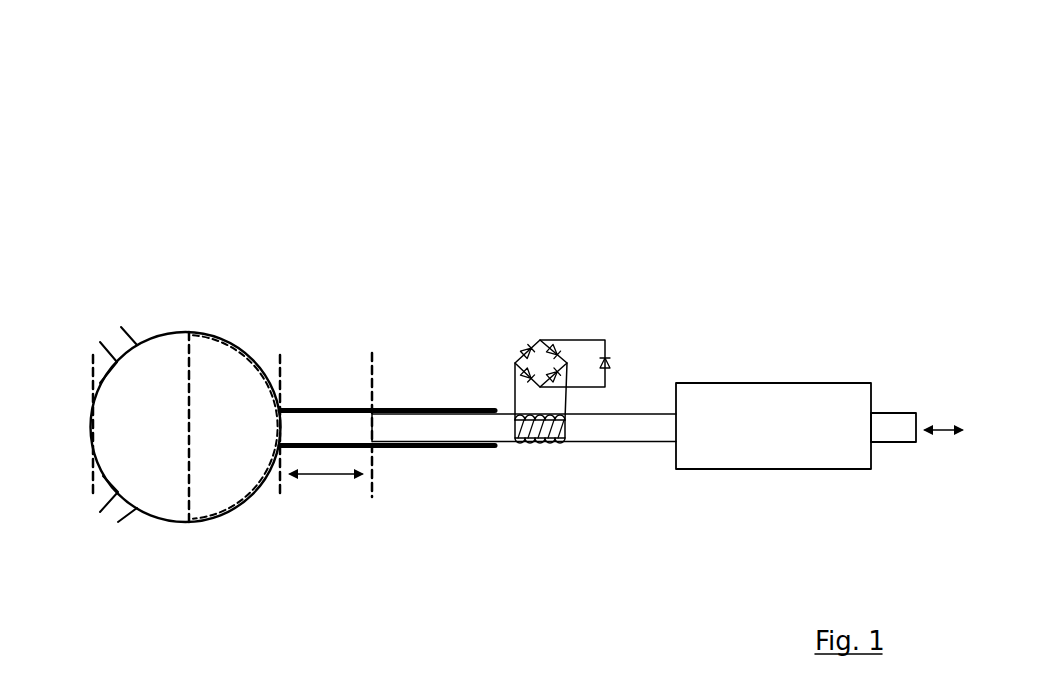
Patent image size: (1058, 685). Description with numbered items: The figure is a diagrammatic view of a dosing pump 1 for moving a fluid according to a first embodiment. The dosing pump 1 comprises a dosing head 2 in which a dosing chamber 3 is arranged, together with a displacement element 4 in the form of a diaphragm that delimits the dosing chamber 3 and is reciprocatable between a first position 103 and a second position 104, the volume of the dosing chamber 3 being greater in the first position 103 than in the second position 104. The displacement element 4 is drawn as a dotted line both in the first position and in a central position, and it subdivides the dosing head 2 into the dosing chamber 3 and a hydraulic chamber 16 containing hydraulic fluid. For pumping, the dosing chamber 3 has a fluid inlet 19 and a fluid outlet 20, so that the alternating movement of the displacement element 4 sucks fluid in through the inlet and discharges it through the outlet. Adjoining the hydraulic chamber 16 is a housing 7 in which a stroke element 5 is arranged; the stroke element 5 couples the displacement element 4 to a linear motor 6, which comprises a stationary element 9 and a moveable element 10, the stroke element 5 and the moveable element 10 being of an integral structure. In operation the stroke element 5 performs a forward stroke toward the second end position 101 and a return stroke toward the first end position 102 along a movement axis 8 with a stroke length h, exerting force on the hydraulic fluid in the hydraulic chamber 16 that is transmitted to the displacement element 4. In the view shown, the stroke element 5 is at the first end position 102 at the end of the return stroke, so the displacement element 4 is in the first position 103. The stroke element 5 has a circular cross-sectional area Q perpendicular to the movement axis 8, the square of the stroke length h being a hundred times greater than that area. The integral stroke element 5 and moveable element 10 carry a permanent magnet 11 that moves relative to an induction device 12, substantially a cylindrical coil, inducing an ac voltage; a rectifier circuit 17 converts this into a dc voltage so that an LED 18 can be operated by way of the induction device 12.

The dosing pump 1 is at (155, 128).
The dosing head 2 is at (212, 238).
The dosing chamber 3 is at (120, 397).
The displacement element 4 is at (190, 333).
The stroke element 5 is at (443, 441).
The linear motor 6 is at (777, 312).
The housing 7 is at (428, 407).
The movement axis 8 is at (950, 424).
The stationary element 9 is at (808, 471).
The moveable element 10 is at (633, 440).
The permanent magnet 11 is at (518, 442).
The induction device 12 is at (557, 443).
The hydraulic chamber 16 is at (227, 500).
The rectifier circuit 17 is at (545, 348).
The LED 18 is at (615, 358).
The fluid inlet 19 is at (120, 522).
The fluid outlet 20 is at (120, 343).
The second end position 101 is at (283, 497).
The first end position 102 is at (374, 498).
The first position 103 is at (280, 497).
The second position 104 is at (92, 500).
The cross-sectional area Q is at (370, 430).
The stroke length h is at (326, 493).